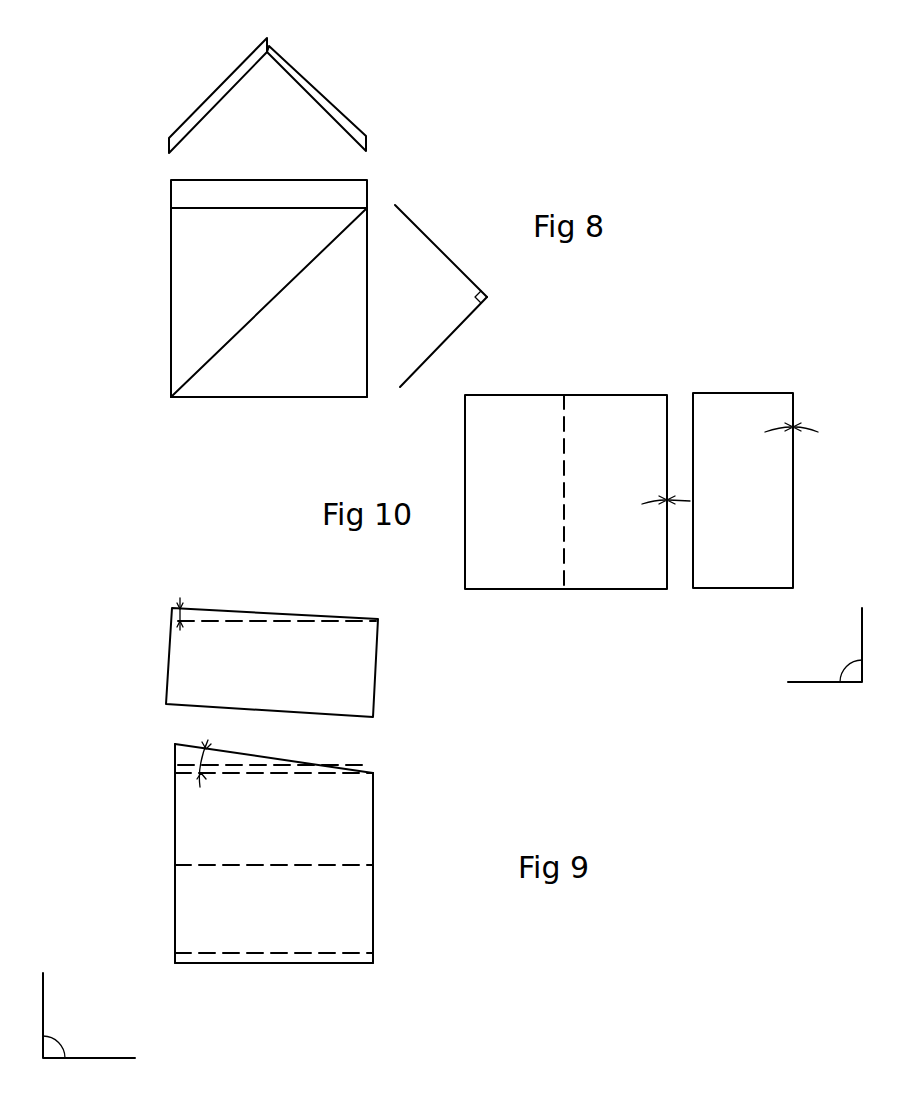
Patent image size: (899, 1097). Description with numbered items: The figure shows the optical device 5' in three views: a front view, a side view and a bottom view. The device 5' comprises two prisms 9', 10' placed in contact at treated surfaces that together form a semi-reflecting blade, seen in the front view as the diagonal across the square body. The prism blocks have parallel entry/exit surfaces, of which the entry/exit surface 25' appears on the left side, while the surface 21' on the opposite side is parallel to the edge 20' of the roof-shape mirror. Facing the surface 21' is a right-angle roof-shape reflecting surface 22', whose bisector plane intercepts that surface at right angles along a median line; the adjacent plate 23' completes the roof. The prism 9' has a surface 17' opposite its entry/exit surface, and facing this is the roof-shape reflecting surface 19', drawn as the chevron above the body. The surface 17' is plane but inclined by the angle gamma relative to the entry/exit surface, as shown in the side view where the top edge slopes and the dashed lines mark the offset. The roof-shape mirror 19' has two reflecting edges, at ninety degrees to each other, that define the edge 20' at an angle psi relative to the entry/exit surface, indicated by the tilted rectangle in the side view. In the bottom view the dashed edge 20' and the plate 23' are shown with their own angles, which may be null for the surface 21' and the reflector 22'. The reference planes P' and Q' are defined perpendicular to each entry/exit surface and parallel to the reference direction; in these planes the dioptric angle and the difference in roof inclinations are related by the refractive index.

In FIG. 8, the device 5' is at (232, 302).
In FIG. 9, the device 5' is at (232, 871).
In FIG. 8, the prism 9' is at (239, 304).
In FIG. 8, the prism 10' is at (269, 429).
In FIG. 8, the surface 17' is at (311, 175).
In FIG. 9, the surface 17' is at (281, 752).
In FIG. 8, the roof-shape reflecting surface 19' is at (349, 98).
In FIG. 9, the roof-shape reflecting surface 19' is at (316, 662).
In FIG. 8, the edge 20' is at (275, 79).
In FIG. 10, the edge 20' is at (606, 464).
In FIG. 8, the surface 21' is at (399, 302).
In FIG. 8, the right-angle roof-shape reflecting surface 22' is at (456, 343).
In FIG. 9, the right-angle roof-shape reflecting surface 22' is at (306, 982).
In FIG. 8, the upper inclined plate 23' is at (477, 265).
In FIG. 10, the upper inclined plate 23' is at (786, 490).
In FIG. 8, the entry/exit surface 25' is at (137, 302).
In FIG. 9, the reference plane P' is at (89, 1015).
In FIG. 10, the reference plane Q' is at (825, 645).